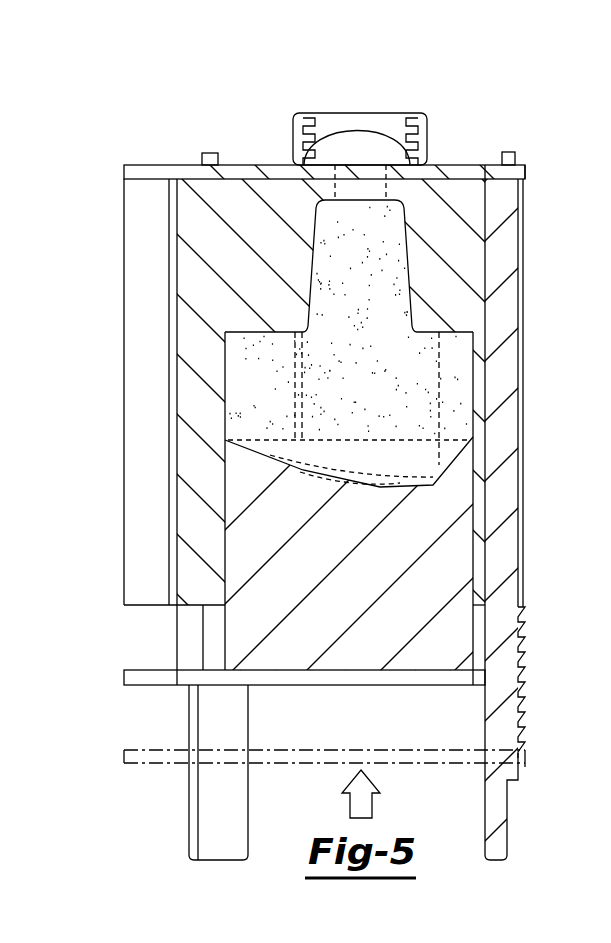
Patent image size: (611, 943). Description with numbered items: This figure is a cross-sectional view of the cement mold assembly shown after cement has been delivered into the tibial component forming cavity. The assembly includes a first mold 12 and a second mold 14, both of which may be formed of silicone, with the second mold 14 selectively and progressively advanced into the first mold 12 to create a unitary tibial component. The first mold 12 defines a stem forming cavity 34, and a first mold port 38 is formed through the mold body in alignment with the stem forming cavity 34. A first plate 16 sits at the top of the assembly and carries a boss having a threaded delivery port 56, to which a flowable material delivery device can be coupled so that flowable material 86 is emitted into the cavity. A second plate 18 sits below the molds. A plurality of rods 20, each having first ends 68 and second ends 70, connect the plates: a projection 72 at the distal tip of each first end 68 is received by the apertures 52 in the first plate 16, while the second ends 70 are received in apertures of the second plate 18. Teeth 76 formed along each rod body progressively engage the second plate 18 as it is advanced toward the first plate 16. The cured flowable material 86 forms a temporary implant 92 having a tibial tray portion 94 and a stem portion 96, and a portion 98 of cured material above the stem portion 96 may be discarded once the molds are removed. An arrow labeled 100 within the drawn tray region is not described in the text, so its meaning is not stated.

The first mold 12 is at (147, 247).
The second mold 14 is at (182, 637).
The first plate 16 is at (149, 166).
The second plate 18 is at (385, 686).
The rods 20 is at (505, 553).
The stem forming cavity 34 is at (313, 298).
The first mold port 38 is at (322, 127).
The apertures 52 is at (527, 176).
The threaded delivery port 56 is at (412, 126).
The first ends 68 is at (510, 217).
The second ends 70 is at (233, 803).
The projection 72 is at (207, 152).
The teeth 76 is at (520, 656).
The flowable material 86 is at (452, 410).
The temporary implant 92 is at (396, 203).
The tibial tray portion 94 is at (267, 392).
The stem portion 96 is at (317, 262).
The portion of cured flowable material 98 is at (365, 168).
The inner portion 100 is at (447, 378).